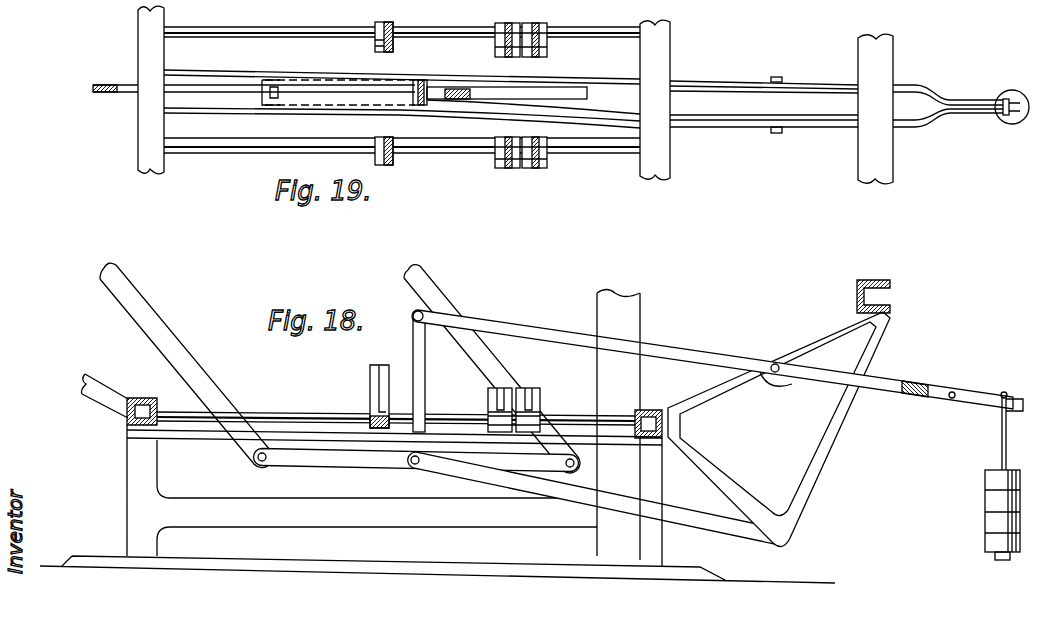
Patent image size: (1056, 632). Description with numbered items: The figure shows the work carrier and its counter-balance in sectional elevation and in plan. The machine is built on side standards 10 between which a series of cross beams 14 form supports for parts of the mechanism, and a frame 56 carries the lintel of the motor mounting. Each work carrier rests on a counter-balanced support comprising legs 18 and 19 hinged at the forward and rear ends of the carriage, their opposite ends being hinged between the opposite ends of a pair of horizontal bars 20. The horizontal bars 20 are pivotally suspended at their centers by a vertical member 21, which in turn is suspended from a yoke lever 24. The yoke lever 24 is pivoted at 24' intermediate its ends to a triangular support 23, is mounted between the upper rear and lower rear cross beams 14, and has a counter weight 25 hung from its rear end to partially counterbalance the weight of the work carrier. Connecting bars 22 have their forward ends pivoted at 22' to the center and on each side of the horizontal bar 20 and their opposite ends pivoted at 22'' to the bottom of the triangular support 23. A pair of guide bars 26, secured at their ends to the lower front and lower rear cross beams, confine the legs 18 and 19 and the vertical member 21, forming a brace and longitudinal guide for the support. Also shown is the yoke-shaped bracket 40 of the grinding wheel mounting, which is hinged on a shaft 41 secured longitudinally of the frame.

In FIG. 18, the side standards 10 is at (127, 463).
In FIG. 19, the cross beams 14 is at (138, 49).
In FIG. 18, the cross beams 14 is at (142, 398).
In FIG. 19, the leg 18 is at (128, 88).
In FIG. 18, the leg 18 is at (146, 318).
In FIG. 19, the leg 19 is at (490, 96).
In FIG. 18, the leg 19 is at (408, 283).
In FIG. 18, the horizontal bars 20 is at (290, 385).
In FIG. 19, the vertical member 21 is at (425, 85).
In FIG. 18, the vertical member 21 is at (425, 386).
In FIG. 18, the connecting bars 22 is at (597, 506).
In FIG. 18, the pivot 22' is at (411, 477).
In FIG. 18, the pivot 22'' is at (785, 554).
In FIG. 18, the triangular support 23 is at (822, 462).
In FIG. 19, the yoke lever 24 is at (764, 90).
In FIG. 18, the yoke lever 24 is at (712, 359).
In FIG. 18, the pivot 24' is at (763, 349).
In FIG. 19, the counter weight 25 is at (1000, 96).
In FIG. 18, the counter weight 25 is at (985, 540).
In FIG. 19, the guide bars 26 is at (255, 73).
In FIG. 18, the guide bars 26 is at (193, 441).
In FIG. 19, the yoke-shaped bracket 40 is at (392, 24).
In FIG. 18, the yoke-shaped bracket 40 is at (370, 385).
In FIG. 19, the shaft 41 is at (603, 35).
In FIG. 18, the shaft 41 is at (556, 412).
In FIG. 18, the frame 56 is at (643, 302).